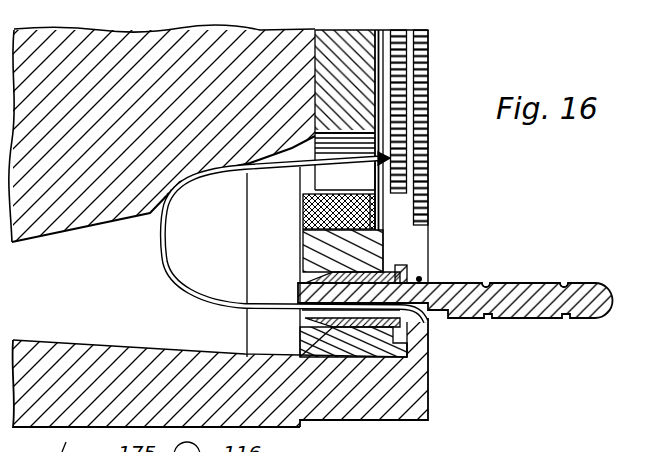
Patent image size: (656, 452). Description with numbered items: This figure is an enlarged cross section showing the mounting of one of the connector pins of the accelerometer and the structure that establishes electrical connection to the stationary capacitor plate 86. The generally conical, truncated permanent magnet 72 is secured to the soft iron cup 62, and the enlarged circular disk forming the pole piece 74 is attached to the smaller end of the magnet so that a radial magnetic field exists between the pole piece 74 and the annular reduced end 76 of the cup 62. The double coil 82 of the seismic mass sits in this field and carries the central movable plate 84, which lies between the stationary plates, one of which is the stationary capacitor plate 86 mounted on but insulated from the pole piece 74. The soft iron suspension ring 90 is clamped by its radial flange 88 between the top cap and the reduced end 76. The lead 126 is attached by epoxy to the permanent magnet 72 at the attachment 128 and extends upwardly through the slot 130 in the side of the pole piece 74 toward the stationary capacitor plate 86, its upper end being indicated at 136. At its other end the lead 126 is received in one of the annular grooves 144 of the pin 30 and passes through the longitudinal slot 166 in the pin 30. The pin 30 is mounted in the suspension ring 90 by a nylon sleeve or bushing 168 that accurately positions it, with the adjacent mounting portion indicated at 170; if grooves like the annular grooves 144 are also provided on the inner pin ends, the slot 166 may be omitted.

The pin 30 is at (533, 312).
The cup 62 is at (77, 363).
The permanent magnet 72 is at (58, 208).
The pole piece 74 is at (338, 48).
The reduced end 76 is at (378, 395).
The double coil 82 is at (305, 207).
The movable plate 84 is at (428, 172).
The stationary capacitor plate 86 is at (430, 111).
The radial flange 88 is at (420, 386).
The suspension ring 90 is at (370, 250).
The lead 126 is at (168, 267).
The epoxy attachment 128 is at (199, 200).
The slot 130 is at (333, 178).
The spring tip 136 is at (391, 153).
The annular grooves 144 is at (486, 282).
The longitudinal slot 166 is at (308, 317).
The nylon sleeve or bushing 168 is at (412, 268).
The bearing block 170 is at (333, 323).